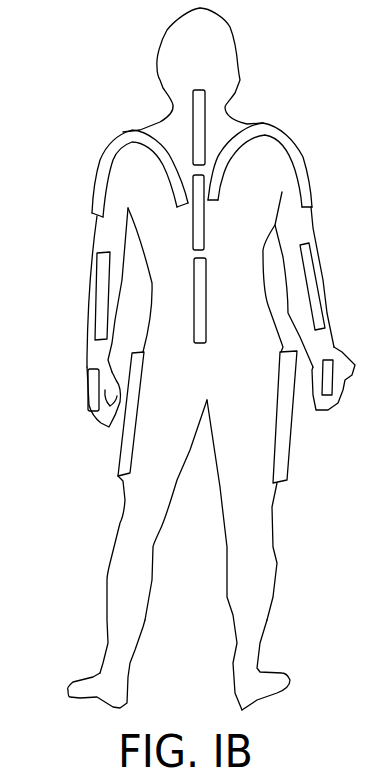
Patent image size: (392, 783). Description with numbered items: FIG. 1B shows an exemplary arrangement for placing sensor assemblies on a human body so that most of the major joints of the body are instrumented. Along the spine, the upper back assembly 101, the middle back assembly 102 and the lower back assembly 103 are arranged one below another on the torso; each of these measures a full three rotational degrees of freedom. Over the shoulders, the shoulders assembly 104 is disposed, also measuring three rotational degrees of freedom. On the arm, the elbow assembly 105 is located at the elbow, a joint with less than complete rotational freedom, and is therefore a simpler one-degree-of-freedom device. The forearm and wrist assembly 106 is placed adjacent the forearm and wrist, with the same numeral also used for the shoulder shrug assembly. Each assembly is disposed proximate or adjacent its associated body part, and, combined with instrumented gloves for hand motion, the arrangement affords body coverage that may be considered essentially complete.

The upper back assembly 101 is at (226, 112).
The middle back assembly 102 is at (204, 230).
The lower back assembly 103 is at (207, 333).
The shoulders assembly 104 is at (102, 143).
The elbow assembly 105 is at (88, 295).
The forearm and wrist assembly 106 is at (86, 398).